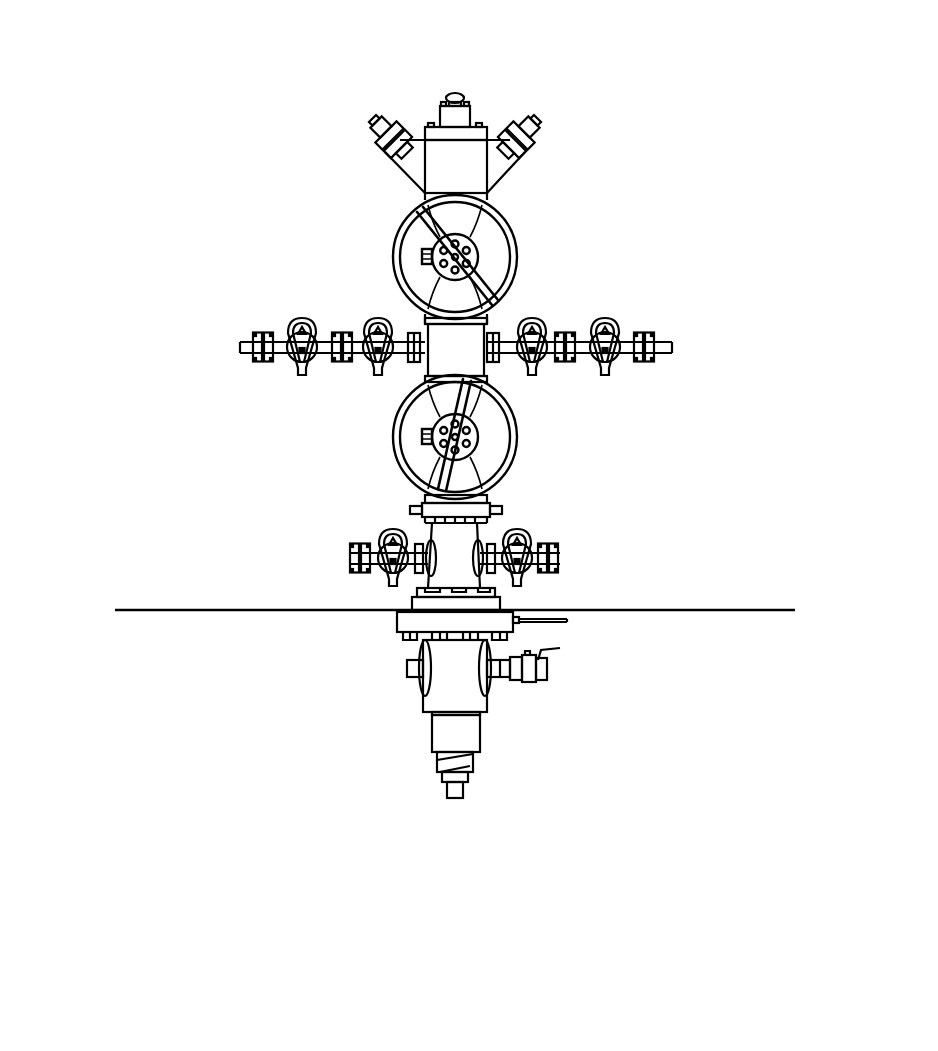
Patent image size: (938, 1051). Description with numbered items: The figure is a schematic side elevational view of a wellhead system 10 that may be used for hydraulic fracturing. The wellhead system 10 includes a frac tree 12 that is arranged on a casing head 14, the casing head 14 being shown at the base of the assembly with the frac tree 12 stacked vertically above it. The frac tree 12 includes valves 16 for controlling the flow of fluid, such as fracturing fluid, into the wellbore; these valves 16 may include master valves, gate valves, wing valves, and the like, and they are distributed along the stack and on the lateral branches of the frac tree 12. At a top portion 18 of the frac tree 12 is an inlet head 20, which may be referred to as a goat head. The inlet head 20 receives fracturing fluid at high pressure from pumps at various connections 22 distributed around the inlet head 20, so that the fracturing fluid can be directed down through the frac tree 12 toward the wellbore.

The wellhead system 10 is at (152, 62).
The frac tree 12 is at (700, 148).
The casing head 14 is at (335, 643).
The valves 16 is at (458, 380).
The top portion 18 is at (585, 62).
The inlet head 20 is at (382, 172).
The connections 22 is at (392, 127).